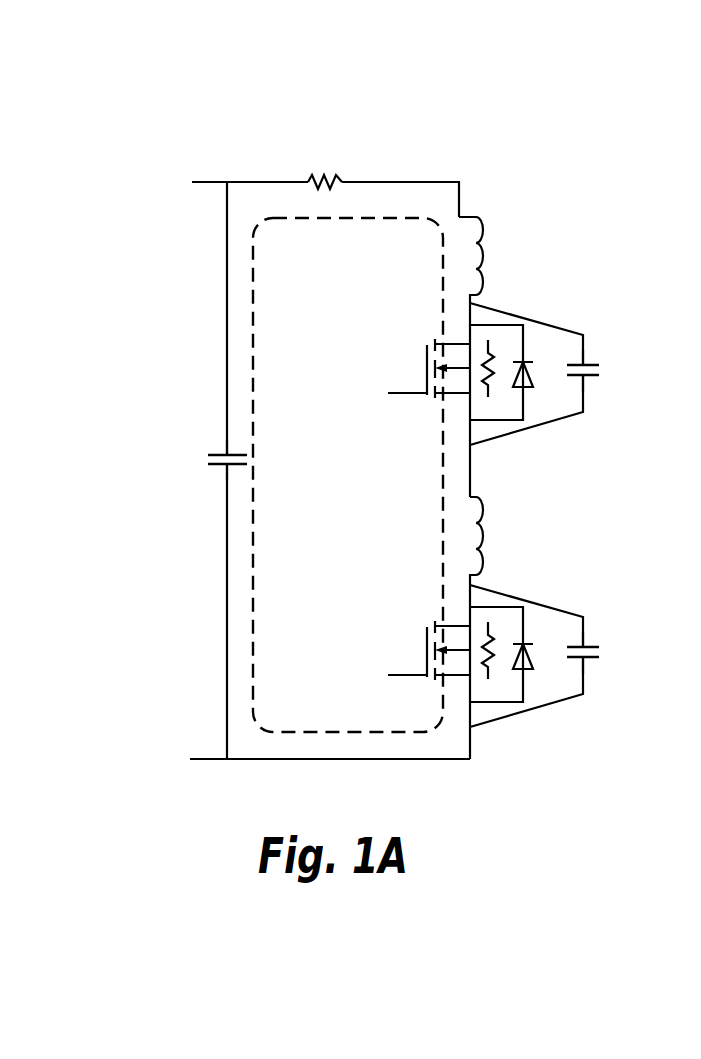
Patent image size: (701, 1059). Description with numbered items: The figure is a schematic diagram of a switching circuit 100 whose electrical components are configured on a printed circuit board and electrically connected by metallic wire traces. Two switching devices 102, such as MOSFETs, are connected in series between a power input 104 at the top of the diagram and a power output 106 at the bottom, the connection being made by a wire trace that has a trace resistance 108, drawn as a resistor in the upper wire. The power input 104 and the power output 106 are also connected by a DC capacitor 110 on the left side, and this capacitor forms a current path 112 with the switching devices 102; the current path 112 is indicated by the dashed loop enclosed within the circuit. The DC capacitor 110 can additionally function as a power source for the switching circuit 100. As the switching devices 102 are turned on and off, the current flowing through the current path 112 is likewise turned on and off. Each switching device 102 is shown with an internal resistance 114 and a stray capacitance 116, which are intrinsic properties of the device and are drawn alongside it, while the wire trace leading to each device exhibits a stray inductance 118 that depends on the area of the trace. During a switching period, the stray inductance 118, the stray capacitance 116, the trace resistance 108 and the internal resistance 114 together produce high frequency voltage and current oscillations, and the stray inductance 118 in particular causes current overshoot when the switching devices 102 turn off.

The switching circuit 100 is at (181, 112).
The switching devices 102 is at (412, 360).
The power input 104 is at (181, 191).
The power output 106 is at (193, 739).
The trace resistance 108 is at (336, 158).
The DC capacitor 110 is at (196, 467).
The current path 112 is at (239, 336).
The internal resistance 114 is at (499, 343).
The stray capacitance 116 is at (612, 353).
The stray inductance 118 is at (492, 238).